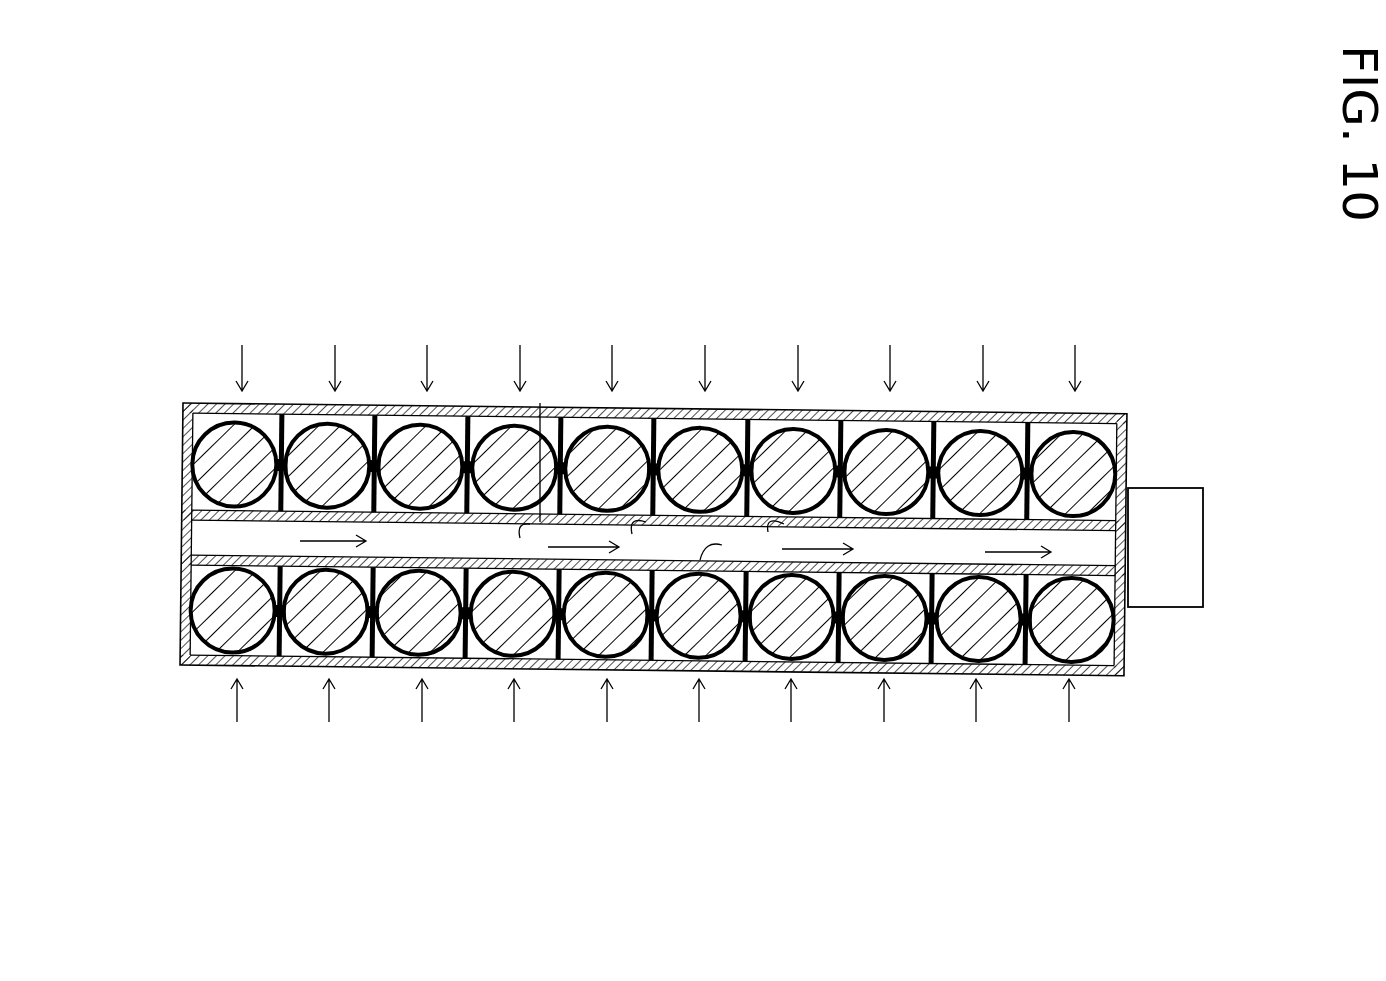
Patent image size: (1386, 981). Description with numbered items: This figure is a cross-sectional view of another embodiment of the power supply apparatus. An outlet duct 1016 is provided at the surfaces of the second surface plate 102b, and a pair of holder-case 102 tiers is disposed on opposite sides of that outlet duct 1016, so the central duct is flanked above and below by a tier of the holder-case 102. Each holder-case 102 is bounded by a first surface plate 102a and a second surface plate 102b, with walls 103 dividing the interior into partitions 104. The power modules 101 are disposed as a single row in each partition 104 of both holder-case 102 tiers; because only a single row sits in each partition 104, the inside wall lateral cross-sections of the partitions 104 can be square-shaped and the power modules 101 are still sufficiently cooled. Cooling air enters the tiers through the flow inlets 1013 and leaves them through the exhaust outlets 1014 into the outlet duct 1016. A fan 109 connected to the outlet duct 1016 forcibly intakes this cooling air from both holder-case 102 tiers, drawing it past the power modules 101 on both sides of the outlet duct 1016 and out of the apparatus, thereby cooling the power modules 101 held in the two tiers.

The power module 101 is at (323, 452).
The holder-case 102 is at (785, 318).
The first surface plate 102a is at (636, 530).
The second surface plate 102b is at (638, 520).
The wall 103 is at (468, 445).
The partition 104 is at (406, 411).
The fan 109 is at (1167, 487).
The flow inlet 1013 is at (346, 401).
The exhaust outlet 1014 is at (538, 522).
The outlet duct 1016 is at (210, 543).